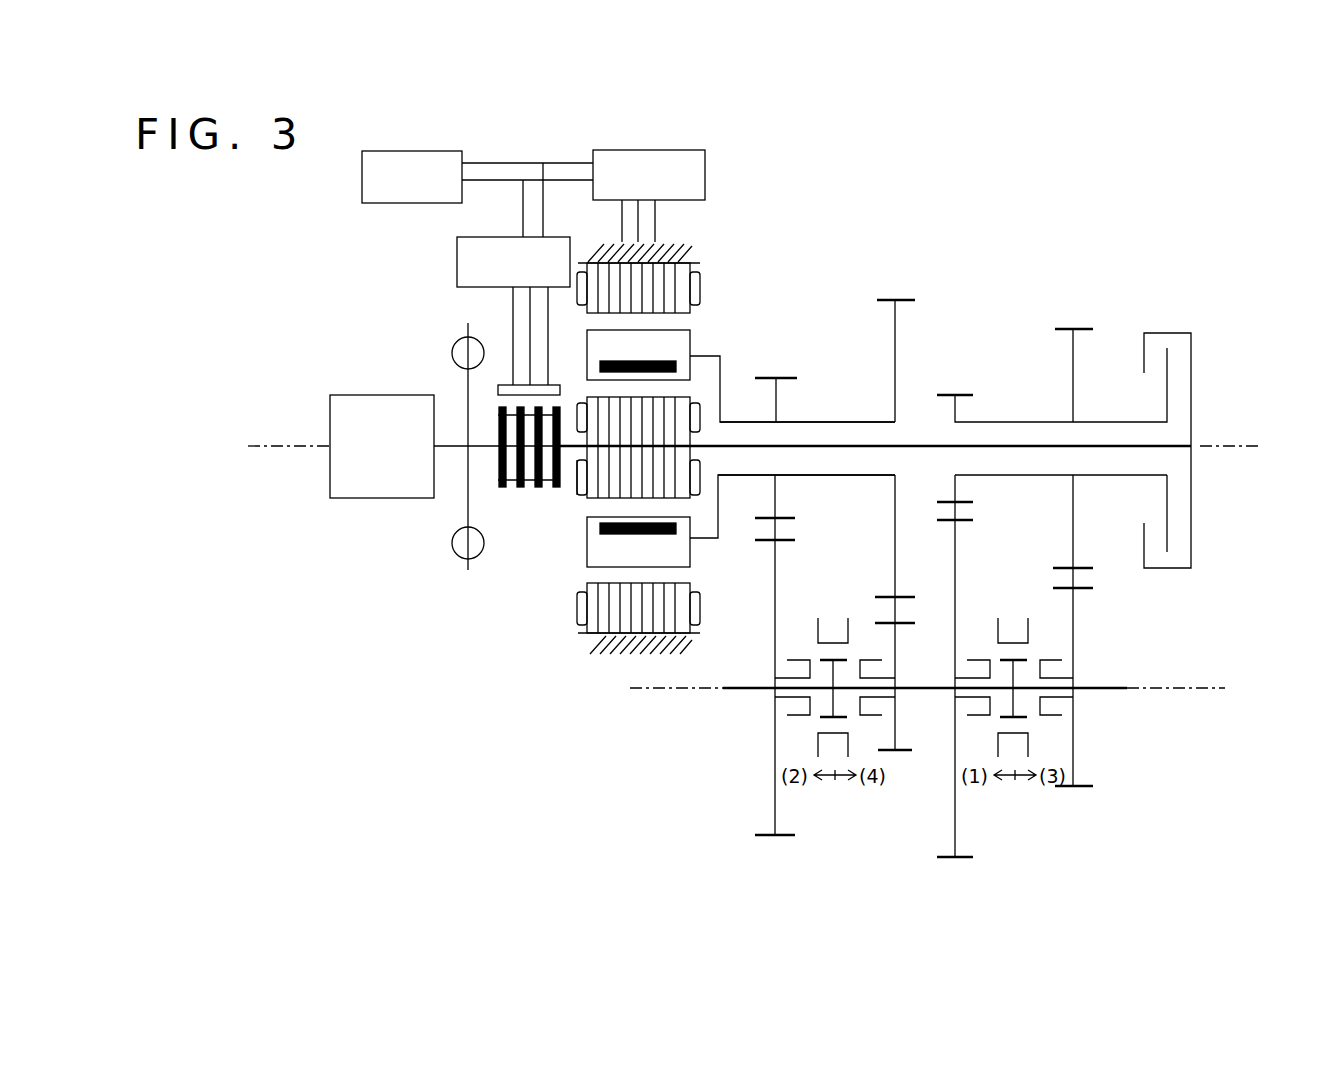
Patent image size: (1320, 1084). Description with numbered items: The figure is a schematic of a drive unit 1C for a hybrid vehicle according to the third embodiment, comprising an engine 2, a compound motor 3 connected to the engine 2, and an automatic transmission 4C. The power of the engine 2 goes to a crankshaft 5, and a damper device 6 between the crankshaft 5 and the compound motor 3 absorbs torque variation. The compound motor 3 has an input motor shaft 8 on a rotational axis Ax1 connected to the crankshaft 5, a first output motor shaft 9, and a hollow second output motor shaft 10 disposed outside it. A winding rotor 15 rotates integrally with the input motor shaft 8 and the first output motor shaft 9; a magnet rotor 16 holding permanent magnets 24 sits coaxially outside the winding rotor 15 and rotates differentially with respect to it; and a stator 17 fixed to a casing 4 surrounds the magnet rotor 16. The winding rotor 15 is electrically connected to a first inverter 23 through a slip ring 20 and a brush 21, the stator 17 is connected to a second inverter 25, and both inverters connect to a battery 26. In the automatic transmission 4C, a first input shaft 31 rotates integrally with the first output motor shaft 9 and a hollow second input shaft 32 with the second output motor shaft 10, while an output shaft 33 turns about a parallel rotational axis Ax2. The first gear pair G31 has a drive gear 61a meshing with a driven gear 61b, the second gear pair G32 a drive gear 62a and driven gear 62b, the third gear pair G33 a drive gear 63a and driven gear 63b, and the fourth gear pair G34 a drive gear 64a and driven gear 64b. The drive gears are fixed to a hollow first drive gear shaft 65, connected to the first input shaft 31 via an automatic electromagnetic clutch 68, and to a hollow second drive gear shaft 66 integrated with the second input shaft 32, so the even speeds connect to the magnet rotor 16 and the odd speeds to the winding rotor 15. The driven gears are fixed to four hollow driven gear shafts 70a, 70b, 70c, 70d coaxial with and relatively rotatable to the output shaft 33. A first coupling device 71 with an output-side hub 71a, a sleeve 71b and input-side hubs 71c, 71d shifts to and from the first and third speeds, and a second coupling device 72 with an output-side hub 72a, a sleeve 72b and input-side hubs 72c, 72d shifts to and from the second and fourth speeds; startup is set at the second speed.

The drive unit 1C is at (880, 160).
The engine 2 is at (345, 395).
The compound motor 3 is at (727, 215).
The casing 4 is at (690, 250).
The automatic transmission 4C is at (1031, 225).
The crankshaft 5 is at (445, 440).
The damper device 6 is at (455, 343).
The input motor shaft 8 is at (577, 485).
The first output motor shaft 9 is at (718, 460).
The second output motor shaft 10 is at (706, 352).
The winding rotor 15 is at (577, 397).
The magnet rotor 16 is at (615, 328).
The stator 17 is at (702, 288).
The slip ring 20 is at (502, 500).
The brush 21 is at (505, 362).
The first inverter 23 is at (457, 262).
The permanent magnets 24 is at (612, 361).
The second inverter 25 is at (593, 188).
The battery 26 is at (362, 178).
The first input shaft 31 is at (920, 440).
The second input shaft 32 is at (745, 415).
The output shaft 33 is at (1127, 690).
The drive gear 61a is at (960, 408).
The driven gear 61b is at (955, 537).
The drive gear 62a is at (780, 398).
The driven gear 62b is at (775, 558).
The drive gear 63a is at (1073, 358).
The driven gear 63b is at (1073, 762).
The drive gear 64a is at (895, 335).
The driven gear 64b is at (895, 640).
The first drive gear shaft 65 is at (1020, 478).
The second drive gear shaft 66 is at (845, 478).
The clutch 68 is at (1168, 333).
The driven gear shaft 70a is at (963, 701).
The driven gear shaft 70b is at (787, 668).
The driven gear shaft 70c is at (1065, 668).
The driven gear shaft 70d is at (895, 698).
The first coupling device 71 is at (1017, 605).
The output-side hub 71a is at (1030, 704).
The sleeve 71b is at (1030, 622).
The input-side hub 71c is at (985, 660).
The input-side hub 71d is at (1062, 662).
The second coupling device 72 is at (833, 605).
The output-side hub 72a is at (818, 718).
The sleeve 72b is at (818, 622).
The input-side hub 72c is at (810, 660).
The input-side hub 72d is at (862, 660).
The first gear pair G31 is at (955, 390).
The second gear pair G32 is at (776, 374).
The third gear pair G33 is at (1073, 324).
The fourth gear pair G34 is at (897, 296).
The rotational axis Ax1 is at (270, 445).
The rotational axis Ax2 is at (640, 700).